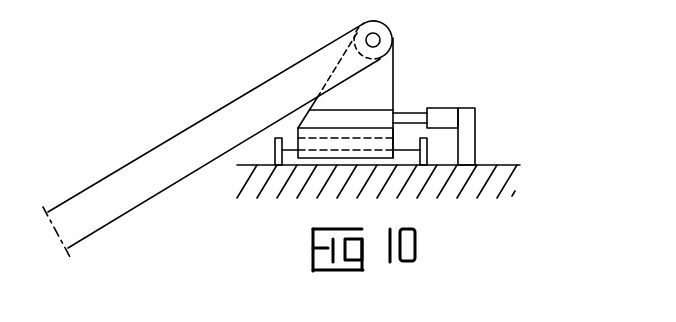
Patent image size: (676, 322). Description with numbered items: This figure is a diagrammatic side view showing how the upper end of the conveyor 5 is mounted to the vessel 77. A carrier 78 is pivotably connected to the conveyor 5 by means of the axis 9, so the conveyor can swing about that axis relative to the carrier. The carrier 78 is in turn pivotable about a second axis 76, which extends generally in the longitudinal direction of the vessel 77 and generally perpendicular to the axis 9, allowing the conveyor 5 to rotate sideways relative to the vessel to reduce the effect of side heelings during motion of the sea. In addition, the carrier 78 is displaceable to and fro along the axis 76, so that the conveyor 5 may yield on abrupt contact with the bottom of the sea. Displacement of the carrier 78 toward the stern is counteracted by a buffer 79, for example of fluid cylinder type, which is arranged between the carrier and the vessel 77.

The conveyor 5 is at (212, 113).
The axis 9 is at (377, 40).
The second axis 76 is at (407, 143).
The vessel 77 is at (507, 175).
The carrier 78 is at (385, 95).
The buffer 79 is at (435, 117).